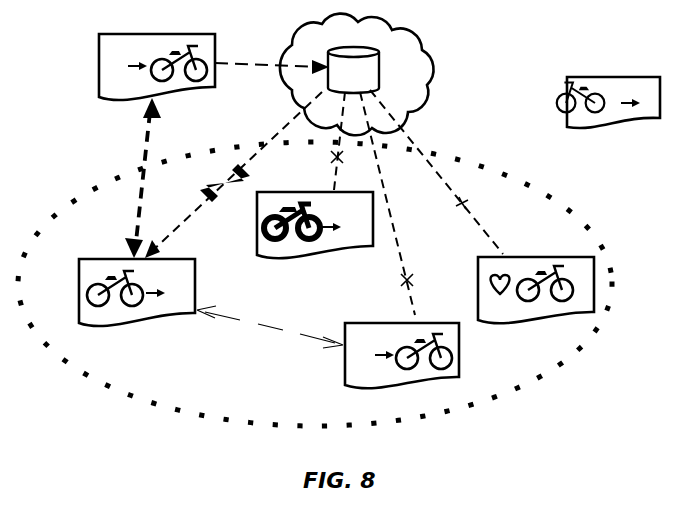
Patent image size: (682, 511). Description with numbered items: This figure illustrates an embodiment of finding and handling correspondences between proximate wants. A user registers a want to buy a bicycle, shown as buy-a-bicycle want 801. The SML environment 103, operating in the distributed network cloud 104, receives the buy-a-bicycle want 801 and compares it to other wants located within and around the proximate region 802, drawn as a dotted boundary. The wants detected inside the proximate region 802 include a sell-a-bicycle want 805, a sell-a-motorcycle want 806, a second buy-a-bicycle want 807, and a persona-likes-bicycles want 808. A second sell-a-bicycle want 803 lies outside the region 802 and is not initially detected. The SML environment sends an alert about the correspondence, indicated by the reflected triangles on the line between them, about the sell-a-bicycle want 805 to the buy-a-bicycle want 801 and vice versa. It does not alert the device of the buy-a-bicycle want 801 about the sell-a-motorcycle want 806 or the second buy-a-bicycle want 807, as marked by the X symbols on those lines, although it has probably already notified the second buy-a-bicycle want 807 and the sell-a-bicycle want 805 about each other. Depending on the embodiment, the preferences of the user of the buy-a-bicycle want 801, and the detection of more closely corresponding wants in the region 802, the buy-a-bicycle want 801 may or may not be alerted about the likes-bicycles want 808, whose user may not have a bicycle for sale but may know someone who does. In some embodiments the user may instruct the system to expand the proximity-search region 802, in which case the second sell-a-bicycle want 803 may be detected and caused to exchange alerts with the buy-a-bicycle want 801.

The SML environment 103 is at (367, 84).
The distributed network cloud 104 is at (284, 88).
The buy-a-bicycle want 801 is at (99, 60).
The proximate region 802 is at (104, 389).
The second sell-a-bicycle want 803 is at (567, 105).
The sell-a-bicycle want 805 is at (105, 323).
The sell-a-motorcycle want 806 is at (276, 257).
The second buy-a-bicycle want 807 is at (344, 356).
The persona-likes-bicycles want 808 is at (521, 321).